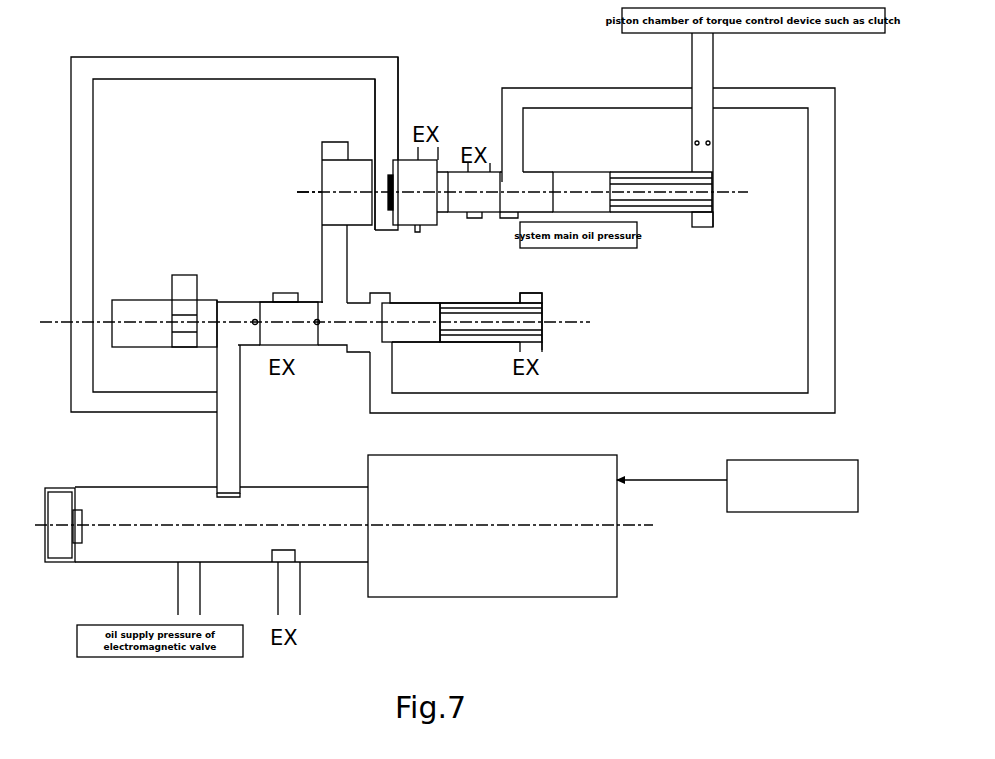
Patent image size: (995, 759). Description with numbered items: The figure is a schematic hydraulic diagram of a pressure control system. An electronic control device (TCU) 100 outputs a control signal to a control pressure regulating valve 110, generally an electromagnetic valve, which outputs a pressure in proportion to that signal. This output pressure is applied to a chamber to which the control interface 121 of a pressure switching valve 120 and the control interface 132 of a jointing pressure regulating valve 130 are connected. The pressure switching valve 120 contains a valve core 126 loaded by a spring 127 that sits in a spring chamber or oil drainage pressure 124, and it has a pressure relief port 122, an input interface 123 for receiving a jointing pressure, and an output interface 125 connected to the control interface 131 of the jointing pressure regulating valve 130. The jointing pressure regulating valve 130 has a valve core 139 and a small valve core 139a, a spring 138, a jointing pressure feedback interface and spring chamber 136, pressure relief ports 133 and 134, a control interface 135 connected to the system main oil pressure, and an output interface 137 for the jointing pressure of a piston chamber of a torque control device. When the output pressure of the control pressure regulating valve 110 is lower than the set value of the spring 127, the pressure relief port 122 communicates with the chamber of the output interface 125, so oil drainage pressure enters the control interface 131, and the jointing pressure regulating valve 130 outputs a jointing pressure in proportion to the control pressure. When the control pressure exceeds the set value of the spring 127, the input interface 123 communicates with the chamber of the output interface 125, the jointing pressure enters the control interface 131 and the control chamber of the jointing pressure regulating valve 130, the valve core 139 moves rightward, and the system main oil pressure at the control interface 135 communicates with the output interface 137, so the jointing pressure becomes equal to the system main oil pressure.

The electronic control device (TCU) 100 is at (780, 503).
The control pressure regulating valve 110 is at (607, 548).
The pressure switching valve 120 is at (192, 352).
The control interface 121 is at (233, 313).
The pressure relief port 122 is at (292, 293).
The input interface 123 is at (383, 318).
The spring chamber or oil drainage pressure 124 is at (553, 292).
The output interface 125 is at (327, 357).
The valve core 126 is at (384, 306).
The spring 127 is at (477, 341).
The jointing pressure regulating valve 130 is at (318, 165).
The control interface 131 is at (320, 144).
The control interface 132 is at (380, 161).
The pressure relief port 133 is at (427, 232).
The pressure relief port 134 is at (487, 216).
The control interface 135 is at (565, 163).
The jointing pressure feedback interface and spring chamber 136 is at (713, 225).
The output interface 137 is at (519, 218).
The spring 138 is at (650, 215).
The valve core 139 is at (552, 167).
The small valve core 139a is at (340, 200).